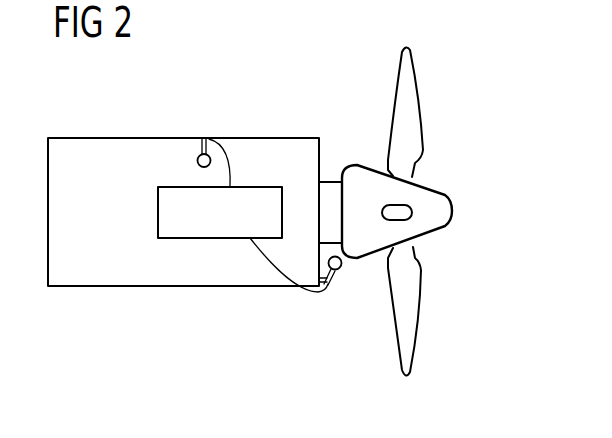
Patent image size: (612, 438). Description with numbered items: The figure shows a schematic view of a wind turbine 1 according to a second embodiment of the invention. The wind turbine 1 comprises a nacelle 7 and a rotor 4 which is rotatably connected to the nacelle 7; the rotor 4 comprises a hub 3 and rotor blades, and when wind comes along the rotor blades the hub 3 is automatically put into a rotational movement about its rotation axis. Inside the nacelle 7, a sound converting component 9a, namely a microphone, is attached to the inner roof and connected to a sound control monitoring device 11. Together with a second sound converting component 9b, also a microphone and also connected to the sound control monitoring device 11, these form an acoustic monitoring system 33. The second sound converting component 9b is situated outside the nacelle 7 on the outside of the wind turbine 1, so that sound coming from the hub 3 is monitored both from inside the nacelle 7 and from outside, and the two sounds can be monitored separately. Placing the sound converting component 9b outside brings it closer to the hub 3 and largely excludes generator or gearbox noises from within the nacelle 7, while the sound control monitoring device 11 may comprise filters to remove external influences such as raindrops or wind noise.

The wind turbine 1 is at (309, 72).
The hub 3 is at (456, 210).
The rotor 4 is at (464, 158).
The nacelle 7 is at (180, 287).
The sound converting component 9a is at (197, 161).
The second sound converting component 9b is at (338, 270).
The sound control monitoring device 11 is at (158, 212).
The acoustic monitoring system 33 is at (145, 231).